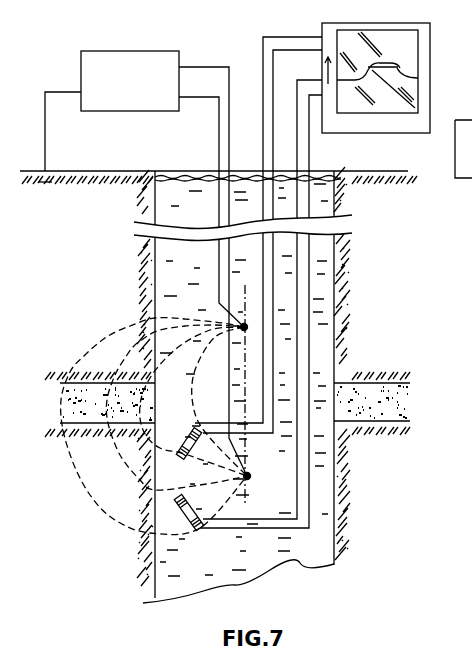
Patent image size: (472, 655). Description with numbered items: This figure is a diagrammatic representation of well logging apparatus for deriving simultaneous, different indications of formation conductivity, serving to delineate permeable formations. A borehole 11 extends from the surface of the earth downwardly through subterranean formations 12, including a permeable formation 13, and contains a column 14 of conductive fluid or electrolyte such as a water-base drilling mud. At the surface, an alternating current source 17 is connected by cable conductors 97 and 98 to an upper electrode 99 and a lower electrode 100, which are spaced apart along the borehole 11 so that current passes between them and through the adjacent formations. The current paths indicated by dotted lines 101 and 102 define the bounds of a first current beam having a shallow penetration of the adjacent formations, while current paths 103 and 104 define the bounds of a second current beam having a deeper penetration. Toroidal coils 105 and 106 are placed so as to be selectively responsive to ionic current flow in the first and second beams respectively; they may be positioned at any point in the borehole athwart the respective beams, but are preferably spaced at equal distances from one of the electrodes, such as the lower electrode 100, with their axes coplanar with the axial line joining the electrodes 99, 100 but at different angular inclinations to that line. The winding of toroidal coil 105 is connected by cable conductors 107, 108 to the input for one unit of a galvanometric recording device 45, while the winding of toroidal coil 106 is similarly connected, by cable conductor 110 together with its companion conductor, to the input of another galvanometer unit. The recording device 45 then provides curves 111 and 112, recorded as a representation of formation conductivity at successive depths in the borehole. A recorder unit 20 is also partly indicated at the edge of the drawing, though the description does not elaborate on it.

The borehole 11 is at (337, 508).
The subterranean formations 12 is at (364, 313).
The permeable formation 13 is at (358, 453).
The column of conductive fluid 14 is at (232, 567).
The alternating current source 17 is at (100, 51).
The recorder unit 20 is at (463, 209).
The galvanometric recording device 45 is at (394, 78).
The cable conductor 97 is at (230, 82).
The cable conductor 98 is at (219, 130).
The upper electrode 99 is at (248, 325).
The lower electrode 100 is at (251, 477).
The current path 101 is at (200, 404).
The current path 102 is at (187, 360).
The current path 103 is at (116, 374).
The current path 104 is at (120, 328).
The toroidal coil 105 is at (185, 458).
The toroidal coil 106 is at (197, 531).
The cable conductor 107 is at (261, 38).
The cable conductor 108 is at (275, 78).
The cable conductor 110 is at (262, 528).
The curve 111 is at (385, 62).
The curve 112 is at (385, 72).